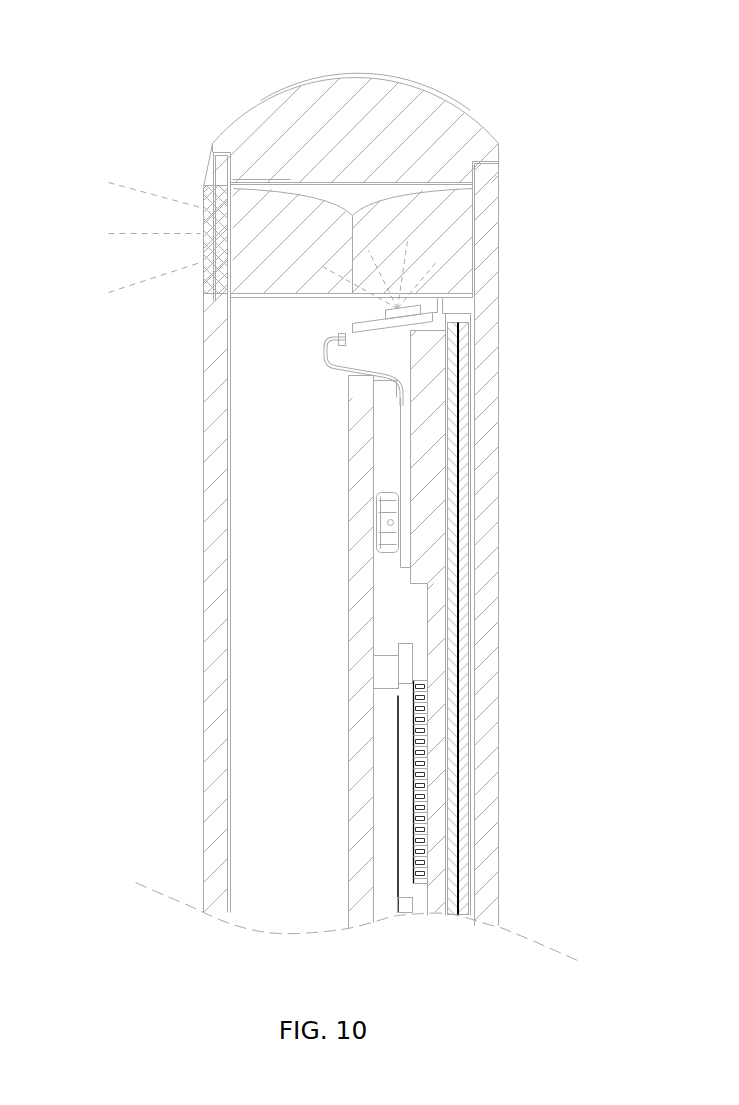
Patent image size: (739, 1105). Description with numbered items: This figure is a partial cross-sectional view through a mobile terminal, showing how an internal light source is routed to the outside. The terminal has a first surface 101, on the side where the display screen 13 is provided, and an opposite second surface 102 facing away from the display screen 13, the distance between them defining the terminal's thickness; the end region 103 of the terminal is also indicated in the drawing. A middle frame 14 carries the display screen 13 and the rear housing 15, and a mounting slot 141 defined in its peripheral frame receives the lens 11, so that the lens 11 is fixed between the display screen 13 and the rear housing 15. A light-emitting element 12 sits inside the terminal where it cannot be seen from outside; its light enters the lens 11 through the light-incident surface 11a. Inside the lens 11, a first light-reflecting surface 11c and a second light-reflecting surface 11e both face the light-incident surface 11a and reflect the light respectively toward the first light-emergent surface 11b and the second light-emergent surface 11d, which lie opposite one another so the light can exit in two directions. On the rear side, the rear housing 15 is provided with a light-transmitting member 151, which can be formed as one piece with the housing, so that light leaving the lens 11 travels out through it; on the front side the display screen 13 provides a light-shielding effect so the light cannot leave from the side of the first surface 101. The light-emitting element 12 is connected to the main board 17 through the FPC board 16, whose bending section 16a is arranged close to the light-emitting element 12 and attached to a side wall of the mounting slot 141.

The lens 11 is at (225, 158).
The light-incident surface 11a is at (412, 312).
The first light-emergent surface 11b is at (210, 186).
The first light-reflecting surface 11c is at (294, 214).
The second light-emergent surface 11d is at (472, 230).
The second light-reflecting surface 11e is at (382, 192).
The light-emitting element 12 is at (362, 322).
The display screen 13 is at (470, 463).
The middle frame 14 is at (342, 137).
The mounting slot 141 is at (482, 162).
The rear housing 15 is at (210, 372).
The light-transmitting member 151 is at (203, 236).
The Flexible Printed Circuit board 16 is at (400, 482).
The bending section 16a is at (327, 357).
The main board 17 is at (355, 622).
The first surface 101 is at (498, 587).
The second surface 102 is at (205, 612).
The top end of housing 103 is at (424, 90).